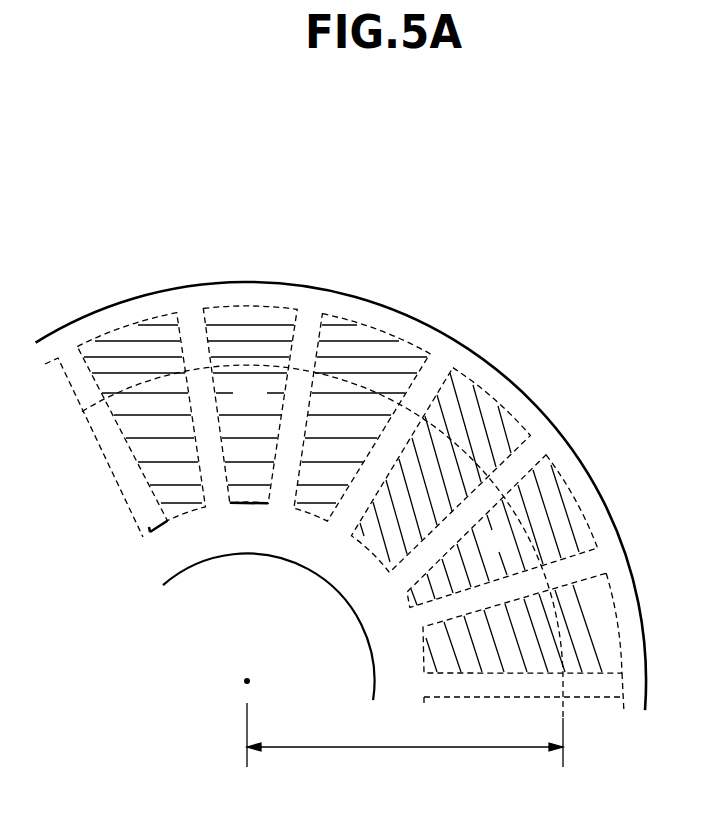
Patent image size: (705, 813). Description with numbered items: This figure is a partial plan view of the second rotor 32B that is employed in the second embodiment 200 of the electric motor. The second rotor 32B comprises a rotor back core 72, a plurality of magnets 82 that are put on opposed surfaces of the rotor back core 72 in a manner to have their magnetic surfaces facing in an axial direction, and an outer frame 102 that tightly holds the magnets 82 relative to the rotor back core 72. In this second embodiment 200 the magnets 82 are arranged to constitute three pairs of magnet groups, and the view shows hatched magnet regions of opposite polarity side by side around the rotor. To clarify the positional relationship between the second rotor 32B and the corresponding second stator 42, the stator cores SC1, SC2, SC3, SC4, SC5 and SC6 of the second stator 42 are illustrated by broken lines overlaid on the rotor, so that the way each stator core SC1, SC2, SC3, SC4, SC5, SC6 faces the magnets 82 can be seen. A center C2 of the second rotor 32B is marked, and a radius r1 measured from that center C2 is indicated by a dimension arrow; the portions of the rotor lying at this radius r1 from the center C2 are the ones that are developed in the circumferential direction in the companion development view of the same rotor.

The second embodiment 200 is at (438, 150).
The second rotor 32B is at (538, 260).
The outer frame 102 is at (613, 535).
The rotor back core 72 is at (373, 627).
The center C2 is at (245, 682).
The radius r1 is at (322, 577).
The second stator 42 is at (115, 330).
The magnets 82 is at (227, 333).
The stator core SC1 is at (143, 320).
The stator core SC2 is at (272, 307).
The stator core SC3 is at (363, 323).
The stator core SC4 is at (483, 390).
The stator core SC5 is at (578, 497).
The stator core SC6 is at (630, 643).